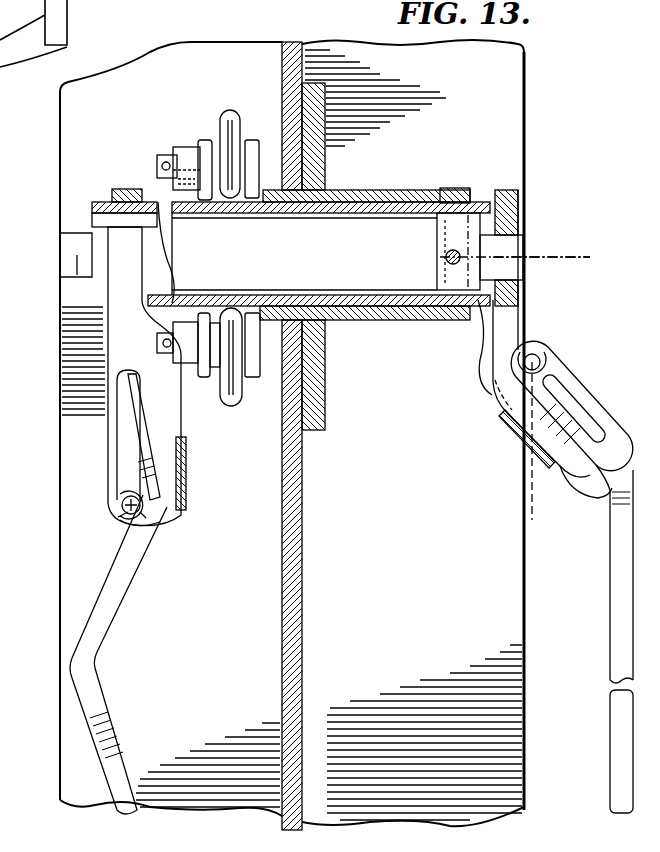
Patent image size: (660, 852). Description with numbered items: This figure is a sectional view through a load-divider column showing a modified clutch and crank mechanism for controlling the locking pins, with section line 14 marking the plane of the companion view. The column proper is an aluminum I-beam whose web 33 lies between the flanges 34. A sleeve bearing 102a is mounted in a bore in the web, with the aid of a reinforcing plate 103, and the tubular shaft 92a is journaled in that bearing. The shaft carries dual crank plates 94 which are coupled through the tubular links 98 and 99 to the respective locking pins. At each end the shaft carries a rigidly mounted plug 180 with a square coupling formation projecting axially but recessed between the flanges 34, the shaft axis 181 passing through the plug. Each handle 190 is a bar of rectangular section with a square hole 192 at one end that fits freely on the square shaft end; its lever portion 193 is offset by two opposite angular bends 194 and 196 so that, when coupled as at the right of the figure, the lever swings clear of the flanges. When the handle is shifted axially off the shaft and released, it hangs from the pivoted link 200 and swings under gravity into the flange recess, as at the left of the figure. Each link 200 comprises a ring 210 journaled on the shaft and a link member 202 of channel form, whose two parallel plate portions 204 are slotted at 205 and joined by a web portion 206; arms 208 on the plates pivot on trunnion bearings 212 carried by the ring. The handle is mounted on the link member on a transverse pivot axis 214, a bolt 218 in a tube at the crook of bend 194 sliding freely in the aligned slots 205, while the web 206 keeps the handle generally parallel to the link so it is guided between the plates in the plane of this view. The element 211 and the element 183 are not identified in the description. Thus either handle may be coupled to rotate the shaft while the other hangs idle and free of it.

The section line 14- 14 is at (50, 215).
The web 33 is at (303, 481).
The flanges 34 is at (517, 104).
The tubular shaft 92a is at (362, 207).
The dual crank plates 94 is at (257, 147).
The tubular link 98 is at (221, 120).
The tubular link 99 is at (243, 400).
The sleeve bearing 102a is at (335, 192).
The reinforcing plate 103 is at (325, 364).
The plug 180 is at (447, 228).
The shaft axis 181 is at (574, 254).
The support plate 183 is at (523, 247).
The handle 190 is at (118, 753).
The square hole 192 is at (512, 270).
The lever portion 193 is at (618, 745).
The angular bend 194 is at (157, 497).
The angular bend 196 is at (93, 663).
The pivoted link 200 is at (194, 528).
The link member 202 is at (194, 471).
The plate portions 204 is at (170, 523).
The slots 205 is at (120, 393).
The web portion 206 is at (181, 437).
The arms 208 is at (117, 287).
The ring 210 is at (122, 189).
The bracket 211 is at (150, 201).
The trunnion bearings 212 is at (447, 275).
The transverse pivot axis 214 is at (128, 517).
The bolt 218 is at (124, 507).